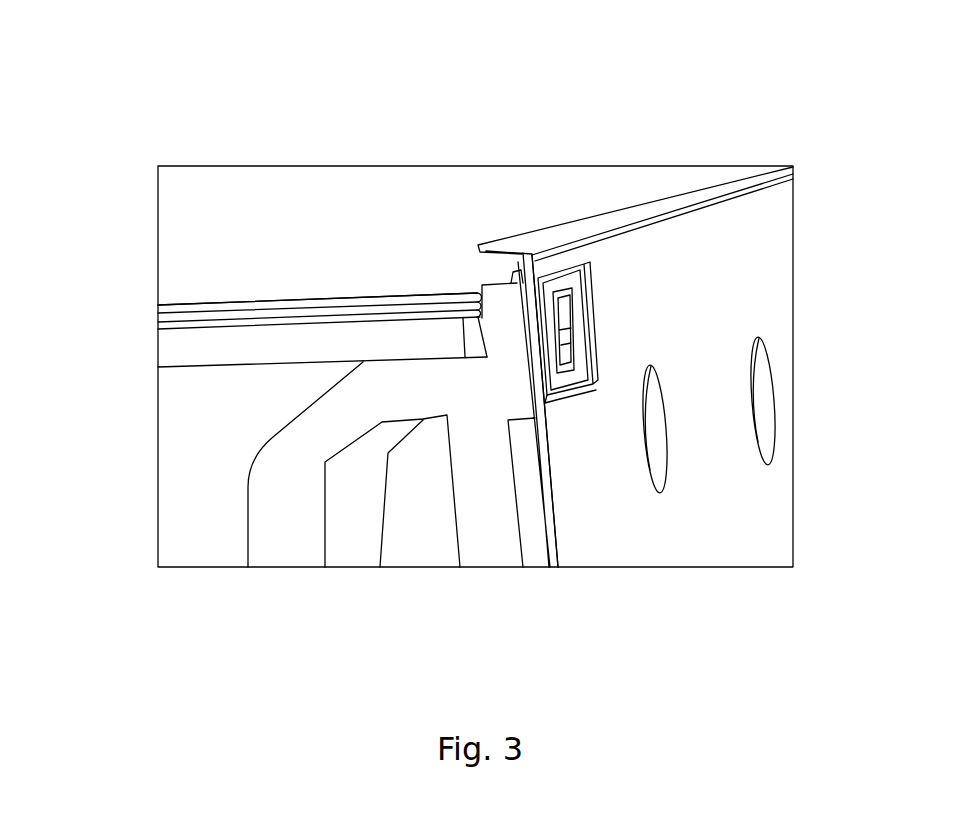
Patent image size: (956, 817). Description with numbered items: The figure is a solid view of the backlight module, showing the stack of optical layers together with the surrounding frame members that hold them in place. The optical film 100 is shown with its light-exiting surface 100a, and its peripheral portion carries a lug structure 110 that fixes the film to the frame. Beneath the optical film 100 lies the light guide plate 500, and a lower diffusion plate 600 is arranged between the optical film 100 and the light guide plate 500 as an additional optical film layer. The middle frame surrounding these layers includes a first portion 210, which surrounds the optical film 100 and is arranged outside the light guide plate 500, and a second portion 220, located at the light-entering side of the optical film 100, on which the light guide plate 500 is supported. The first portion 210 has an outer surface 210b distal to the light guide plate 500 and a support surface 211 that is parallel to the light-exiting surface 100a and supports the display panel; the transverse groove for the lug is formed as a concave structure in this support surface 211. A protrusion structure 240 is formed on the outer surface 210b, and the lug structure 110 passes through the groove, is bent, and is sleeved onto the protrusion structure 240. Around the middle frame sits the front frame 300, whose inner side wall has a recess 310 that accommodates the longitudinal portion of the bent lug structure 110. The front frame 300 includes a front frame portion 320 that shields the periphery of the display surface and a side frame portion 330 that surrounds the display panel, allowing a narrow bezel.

The optical film 100 is at (180, 302).
The light-exiting surface 100a is at (352, 256).
The lug structure 110 is at (585, 278).
The first portion 210 is at (480, 380).
The outer surface 210b is at (665, 320).
The support surface 211 is at (593, 245).
The second portion 220 is at (400, 400).
The protrusion structure 240 is at (573, 347).
The front frame 300 is at (713, 212).
The recess 310 is at (545, 403).
The front frame portion 320 is at (550, 237).
The side frame portion 330 is at (555, 500).
The light guide plate 500 is at (182, 352).
The lower diffusion plate 600 is at (158, 323).